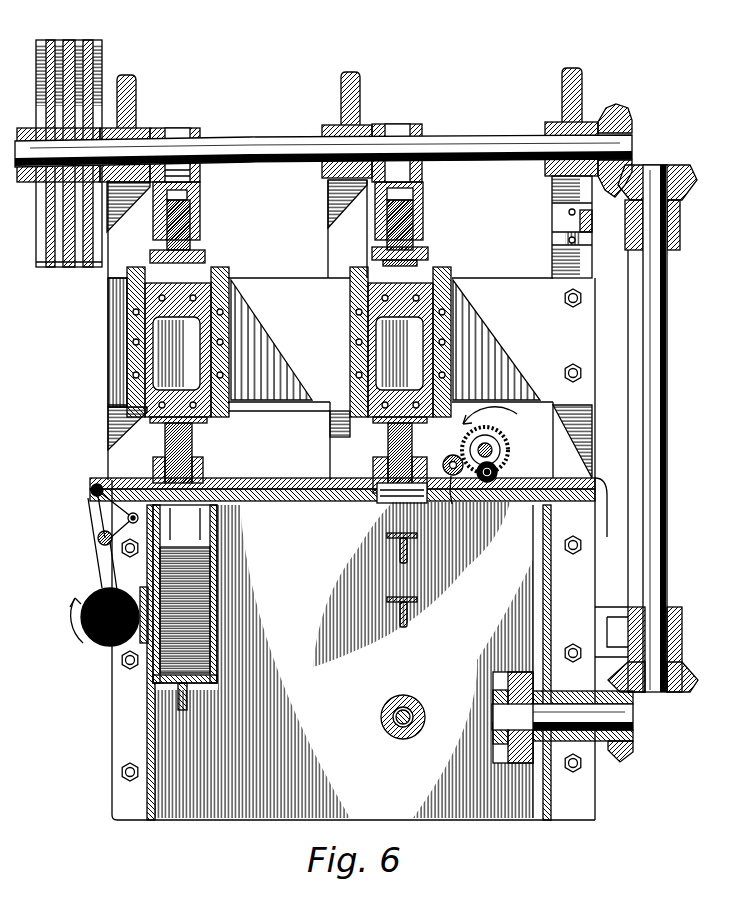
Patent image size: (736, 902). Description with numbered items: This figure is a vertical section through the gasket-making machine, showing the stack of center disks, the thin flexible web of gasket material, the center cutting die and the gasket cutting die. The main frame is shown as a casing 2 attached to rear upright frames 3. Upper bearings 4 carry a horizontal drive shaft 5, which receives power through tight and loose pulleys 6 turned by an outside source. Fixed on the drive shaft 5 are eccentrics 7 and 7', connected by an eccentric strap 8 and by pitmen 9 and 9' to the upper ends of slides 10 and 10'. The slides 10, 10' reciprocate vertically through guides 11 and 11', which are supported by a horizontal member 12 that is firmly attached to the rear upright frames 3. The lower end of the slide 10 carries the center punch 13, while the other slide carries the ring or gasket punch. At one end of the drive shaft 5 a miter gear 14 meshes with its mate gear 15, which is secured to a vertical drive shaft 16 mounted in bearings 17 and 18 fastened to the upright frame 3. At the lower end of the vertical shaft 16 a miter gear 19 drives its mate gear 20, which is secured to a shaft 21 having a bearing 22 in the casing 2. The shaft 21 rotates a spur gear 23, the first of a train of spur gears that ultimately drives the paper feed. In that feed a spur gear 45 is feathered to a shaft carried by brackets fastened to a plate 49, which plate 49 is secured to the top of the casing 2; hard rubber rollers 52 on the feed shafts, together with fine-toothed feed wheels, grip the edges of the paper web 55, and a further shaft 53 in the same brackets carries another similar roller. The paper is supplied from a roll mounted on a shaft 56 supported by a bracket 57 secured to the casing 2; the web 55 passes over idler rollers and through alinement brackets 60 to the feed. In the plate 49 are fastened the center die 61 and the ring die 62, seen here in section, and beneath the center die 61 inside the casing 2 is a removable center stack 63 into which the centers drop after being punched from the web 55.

The casing 2 is at (153, 818).
The rear upright frames 3 is at (594, 418).
The upper bearings 4 is at (148, 130).
The horizontal drive shaft 5 is at (284, 164).
The tight and loose pulleys 6 is at (66, 40).
The eccentric 7 is at (196, 173).
The eccentric 7' is at (416, 143).
The eccentric strap 8 is at (200, 130).
The pitman 9 is at (188, 222).
The pitman 9' is at (420, 216).
The slide 10 is at (176, 353).
The slide 10' is at (426, 253).
The guide 11 is at (201, 335).
The guide 11' is at (420, 335).
The horizontal member 12 is at (506, 280).
The center punch 13 is at (380, 466).
The miter gear 14 is at (628, 145).
The mate gear 15 is at (680, 170).
The vertical drive shaft 16 is at (668, 345).
The bearing 17 is at (681, 241).
The bearing 18 is at (684, 638).
The miter gear 19 is at (686, 684).
The mate gear 20 is at (630, 748).
The shaft 21 is at (636, 720).
The bearing 22 is at (590, 745).
The spur gear 23 is at (516, 762).
The mate spur gear 45 is at (497, 436).
The plate 49 is at (596, 478).
The rollers 52 is at (492, 452).
The shaft 53 is at (452, 504).
The paper web 55 is at (98, 642).
The shaft 56 is at (102, 645).
The bracket 57 is at (130, 648).
The alinement brackets 60 is at (153, 478).
The center die 61 is at (204, 480).
The ring die 62 is at (452, 462).
The removable center stack 63 is at (215, 680).